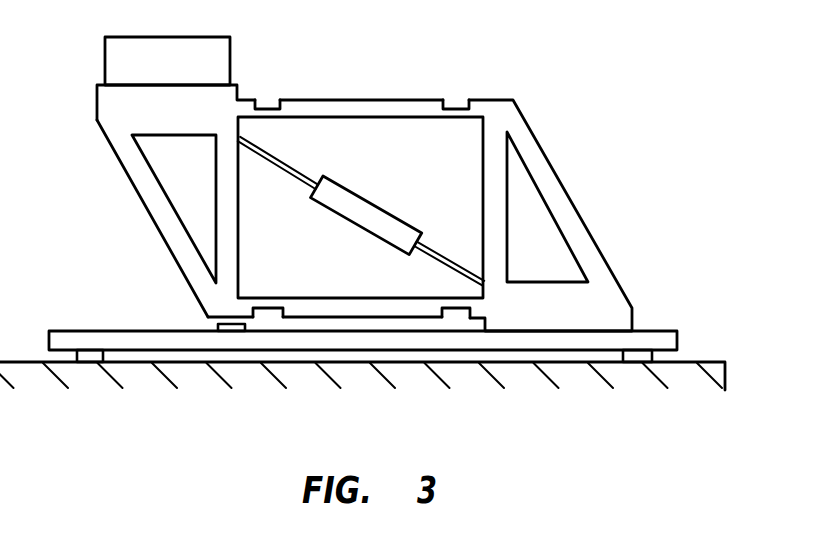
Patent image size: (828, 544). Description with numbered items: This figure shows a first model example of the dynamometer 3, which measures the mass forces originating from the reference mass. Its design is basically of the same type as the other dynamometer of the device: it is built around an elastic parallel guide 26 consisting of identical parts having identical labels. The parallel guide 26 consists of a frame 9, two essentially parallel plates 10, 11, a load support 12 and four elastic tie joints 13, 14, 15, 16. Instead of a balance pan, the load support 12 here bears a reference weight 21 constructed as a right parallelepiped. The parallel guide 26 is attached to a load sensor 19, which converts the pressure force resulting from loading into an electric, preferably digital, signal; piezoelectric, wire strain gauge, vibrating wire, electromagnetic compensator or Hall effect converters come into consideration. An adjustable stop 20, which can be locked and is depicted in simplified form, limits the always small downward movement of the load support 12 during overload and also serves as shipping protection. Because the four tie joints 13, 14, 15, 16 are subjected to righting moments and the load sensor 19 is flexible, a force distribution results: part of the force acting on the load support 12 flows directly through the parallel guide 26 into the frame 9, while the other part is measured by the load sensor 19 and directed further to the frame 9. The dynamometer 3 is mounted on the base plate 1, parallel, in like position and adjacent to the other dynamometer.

The base plate 1 is at (678, 337).
The dynamometer 3 is at (607, 252).
The frame 9 is at (547, 167).
The plate 10 is at (364, 100).
The plate 11 is at (345, 305).
The load support 12 is at (113, 118).
The elastic tie joint 13 is at (463, 100).
The elastic tie joint 14 is at (270, 100).
The elastic tie joint 15 is at (270, 307).
The elastic tie joint 16 is at (450, 307).
The load sensor 19 is at (343, 206).
The adjustable stop 20 is at (218, 327).
The reference weight 21 is at (105, 57).
The elastic parallel guide 26 is at (263, 257).